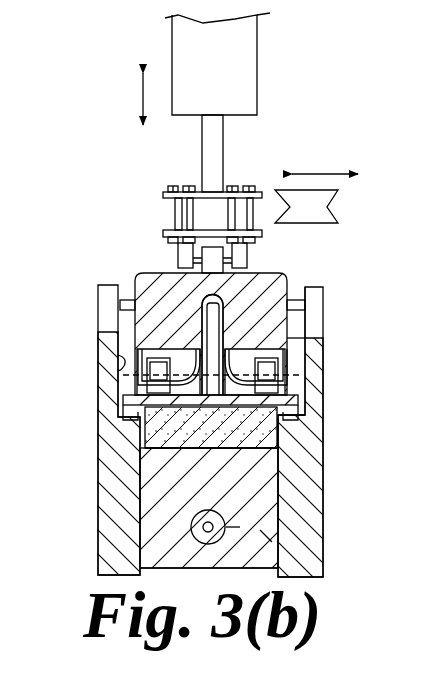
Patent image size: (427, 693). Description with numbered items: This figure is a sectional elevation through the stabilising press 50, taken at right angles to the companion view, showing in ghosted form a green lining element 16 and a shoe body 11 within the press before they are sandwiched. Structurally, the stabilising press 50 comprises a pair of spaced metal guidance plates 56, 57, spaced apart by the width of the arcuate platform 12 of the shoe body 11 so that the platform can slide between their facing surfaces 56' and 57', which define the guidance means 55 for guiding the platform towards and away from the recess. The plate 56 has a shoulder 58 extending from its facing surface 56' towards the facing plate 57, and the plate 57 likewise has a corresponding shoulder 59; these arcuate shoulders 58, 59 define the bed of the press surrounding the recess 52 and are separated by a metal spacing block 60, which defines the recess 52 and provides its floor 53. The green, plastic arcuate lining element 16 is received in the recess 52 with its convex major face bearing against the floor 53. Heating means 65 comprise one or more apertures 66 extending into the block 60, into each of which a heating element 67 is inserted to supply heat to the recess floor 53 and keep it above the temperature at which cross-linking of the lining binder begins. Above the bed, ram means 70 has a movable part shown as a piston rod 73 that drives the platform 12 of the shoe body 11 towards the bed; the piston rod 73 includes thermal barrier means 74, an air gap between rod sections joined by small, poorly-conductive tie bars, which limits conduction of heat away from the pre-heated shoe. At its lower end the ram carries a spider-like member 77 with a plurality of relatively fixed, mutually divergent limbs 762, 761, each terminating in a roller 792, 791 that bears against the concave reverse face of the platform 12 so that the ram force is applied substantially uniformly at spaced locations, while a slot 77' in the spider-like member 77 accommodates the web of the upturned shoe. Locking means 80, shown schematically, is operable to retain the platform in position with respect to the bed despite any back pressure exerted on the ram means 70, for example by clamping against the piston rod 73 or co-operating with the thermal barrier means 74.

The ram means 70 is at (238, 77).
The piston rod 73 is at (212, 145).
The thermal barrier means 74 is at (160, 211).
The stabilising press 50 is at (132, 172).
The locking means 80 is at (325, 204).
The guidance means 55 is at (127, 282).
The arcuate platform 12 is at (204, 398).
The spider-like member 77 is at (225, 311).
The slot 77' is at (289, 329).
The limb 762 is at (143, 338).
The limb 761 is at (288, 345).
The shoe body 11 is at (199, 349).
The guidance plate 56 is at (84, 430).
The guidance plate 57 is at (327, 432).
The facing surface 56' is at (66, 372).
The facing surface 57' is at (341, 312).
The roller 791 is at (293, 402).
The roller 792 is at (116, 411).
The shoulder 58 is at (147, 443).
The shoulder 59 is at (281, 415).
The recess 52 is at (283, 428).
The floor 53 is at (247, 452).
The lining element 16 is at (150, 448).
The heating means 65 is at (178, 538).
The aperture 66 is at (204, 532).
The spacing block 60 is at (213, 528).
The heating element 67 is at (267, 537).